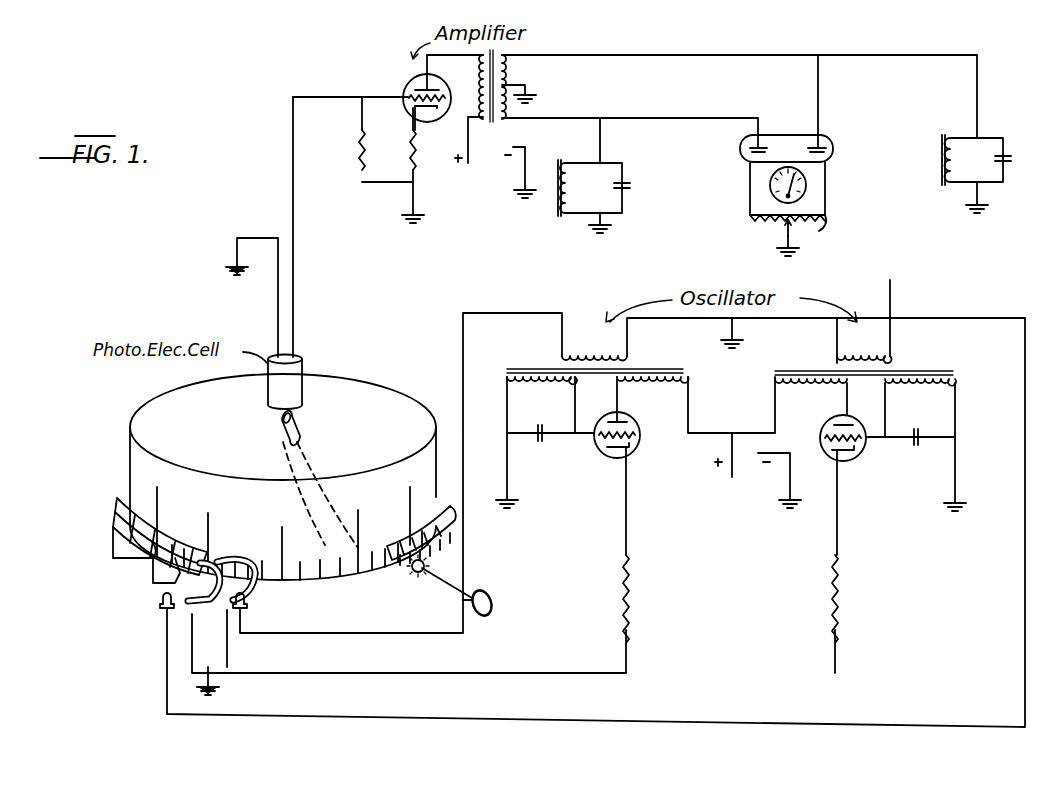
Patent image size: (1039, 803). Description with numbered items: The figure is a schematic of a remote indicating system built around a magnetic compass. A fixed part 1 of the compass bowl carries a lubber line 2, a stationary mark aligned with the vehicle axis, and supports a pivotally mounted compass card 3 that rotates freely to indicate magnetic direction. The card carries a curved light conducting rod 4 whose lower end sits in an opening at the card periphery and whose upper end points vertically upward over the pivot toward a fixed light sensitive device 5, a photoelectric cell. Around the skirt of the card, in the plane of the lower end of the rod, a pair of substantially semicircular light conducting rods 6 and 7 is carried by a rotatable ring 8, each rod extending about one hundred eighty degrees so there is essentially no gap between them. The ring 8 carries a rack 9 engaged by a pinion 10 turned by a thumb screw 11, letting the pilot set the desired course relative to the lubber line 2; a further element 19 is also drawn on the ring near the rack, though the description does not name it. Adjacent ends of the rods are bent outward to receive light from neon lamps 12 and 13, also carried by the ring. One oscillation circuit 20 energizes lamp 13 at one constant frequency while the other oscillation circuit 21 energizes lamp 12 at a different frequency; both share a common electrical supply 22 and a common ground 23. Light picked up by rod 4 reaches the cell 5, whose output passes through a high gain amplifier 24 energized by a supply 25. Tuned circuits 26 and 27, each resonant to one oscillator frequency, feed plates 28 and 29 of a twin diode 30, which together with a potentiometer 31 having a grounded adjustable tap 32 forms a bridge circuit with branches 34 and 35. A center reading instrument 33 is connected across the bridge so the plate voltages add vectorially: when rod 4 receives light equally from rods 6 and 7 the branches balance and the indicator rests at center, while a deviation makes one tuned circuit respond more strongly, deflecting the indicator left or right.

The fixed part of magnetic compass bowl 1 is at (112, 545).
The lubber line 2 is at (151, 568).
The compass card 3 is at (146, 400).
The light conducting rod 4 is at (310, 457).
The light sensitive device 5 is at (308, 367).
The semicircular light conducting rod 6 is at (270, 583).
The semicircular light conducting rod 7 is at (197, 604).
The rotatable ring 8 is at (114, 503).
The rack 9 is at (155, 511).
The pinion 10 is at (410, 576).
The thumb screw 11 is at (484, 588).
The light source 12 is at (155, 598).
The light source 13 is at (248, 604).
The contact strip 19 is at (423, 535).
The oscillation circuit 20 is at (555, 453).
The oscillation circuit 21 is at (863, 462).
The source of electrical supply 22 is at (721, 478).
The common ground 23 is at (216, 679).
The high gain amplifier 24 is at (416, 79).
The electrical supply 25 is at (452, 170).
The tuned circuit 26 is at (633, 159).
The tuned circuit 27 is at (993, 132).
The plate 28 is at (760, 145).
The plate 29 is at (826, 142).
The twin diode 30 is at (827, 152).
The potentiometer 31 is at (819, 231).
The adjustable tap 32 is at (779, 225).
The center reading instrument 33 is at (810, 198).
The branch of bridge circuit 34 is at (749, 178).
The branch of bridge circuit 35 is at (826, 179).